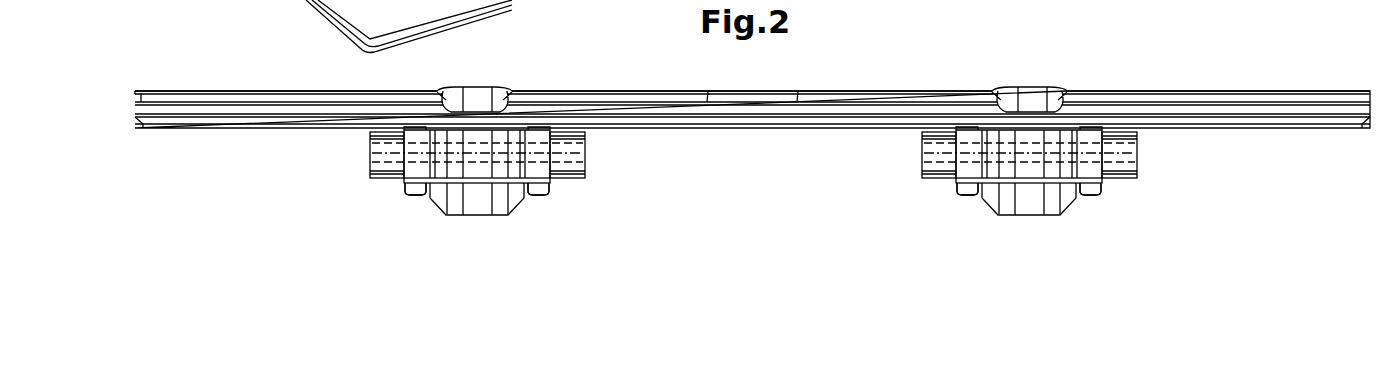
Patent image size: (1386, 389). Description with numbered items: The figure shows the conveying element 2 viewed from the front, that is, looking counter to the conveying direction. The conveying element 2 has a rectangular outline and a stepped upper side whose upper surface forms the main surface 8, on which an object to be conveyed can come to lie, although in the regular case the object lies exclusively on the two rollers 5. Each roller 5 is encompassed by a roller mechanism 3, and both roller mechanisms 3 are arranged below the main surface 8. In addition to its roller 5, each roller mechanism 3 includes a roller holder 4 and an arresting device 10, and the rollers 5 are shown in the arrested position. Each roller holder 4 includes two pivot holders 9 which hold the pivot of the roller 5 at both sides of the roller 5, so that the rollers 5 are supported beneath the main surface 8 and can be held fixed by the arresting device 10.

The conveying element 2 is at (1308, 97).
The roller mechanism 3 is at (600, 175).
The roller holder 4 is at (398, 188).
The roller 5 is at (475, 208).
The main surface 8 is at (898, 91).
The pivot holder 9 is at (375, 167).
The arresting device 10 is at (547, 182).